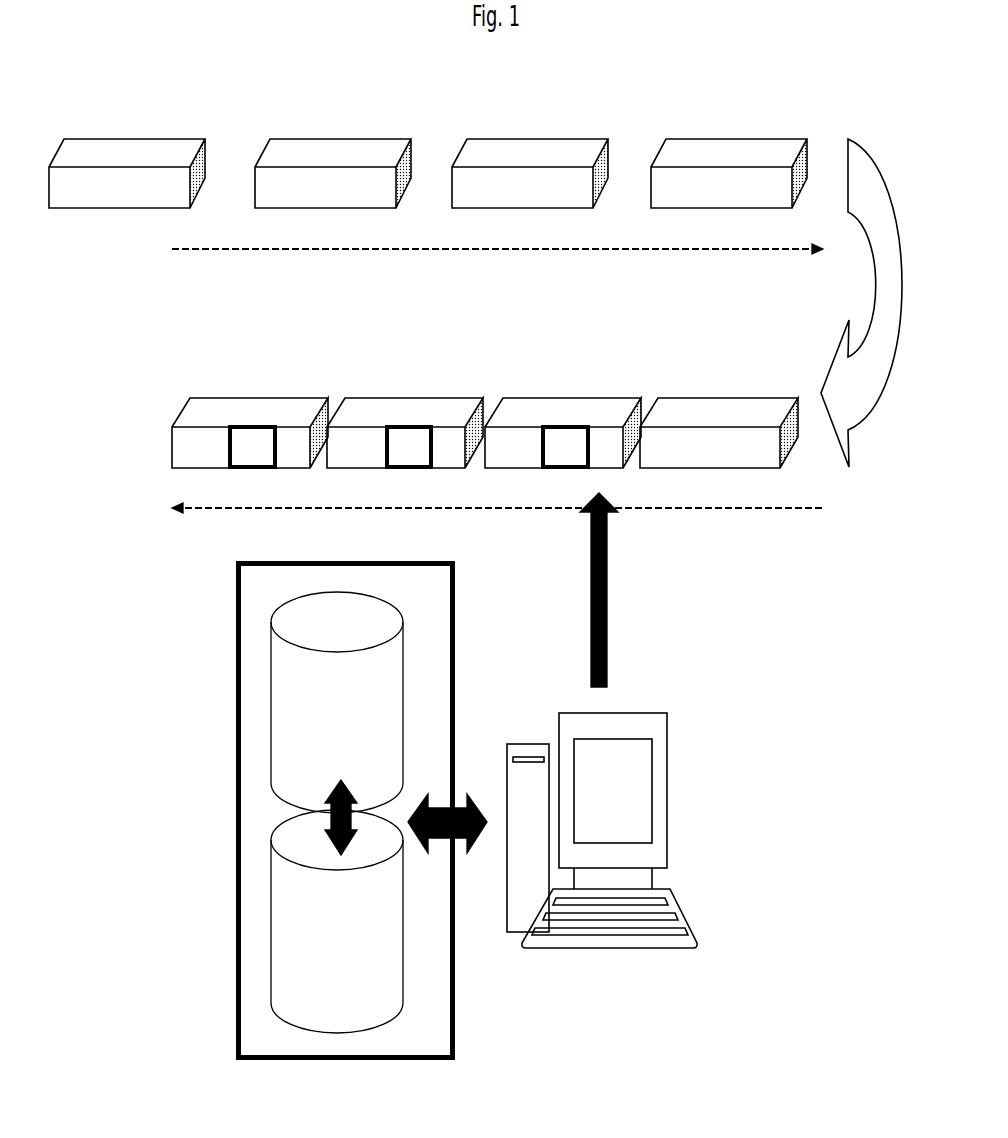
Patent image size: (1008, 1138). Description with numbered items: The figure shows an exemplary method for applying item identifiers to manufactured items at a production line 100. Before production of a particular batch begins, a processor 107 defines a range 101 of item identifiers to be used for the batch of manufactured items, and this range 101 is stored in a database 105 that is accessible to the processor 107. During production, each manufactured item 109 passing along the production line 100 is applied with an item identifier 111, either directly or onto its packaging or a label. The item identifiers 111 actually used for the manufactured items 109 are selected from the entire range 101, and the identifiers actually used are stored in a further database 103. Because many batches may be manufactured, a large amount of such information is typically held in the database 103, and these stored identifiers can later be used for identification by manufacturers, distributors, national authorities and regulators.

The production line 100 is at (140, 332).
The range of item identifiers 101 is at (337, 702).
The database of identifiers actually used 103 is at (337, 921).
The database 105 is at (240, 630).
The processor 107 is at (607, 796).
The manufactured item 109 is at (120, 167).
The item identifier 111 is at (257, 425).